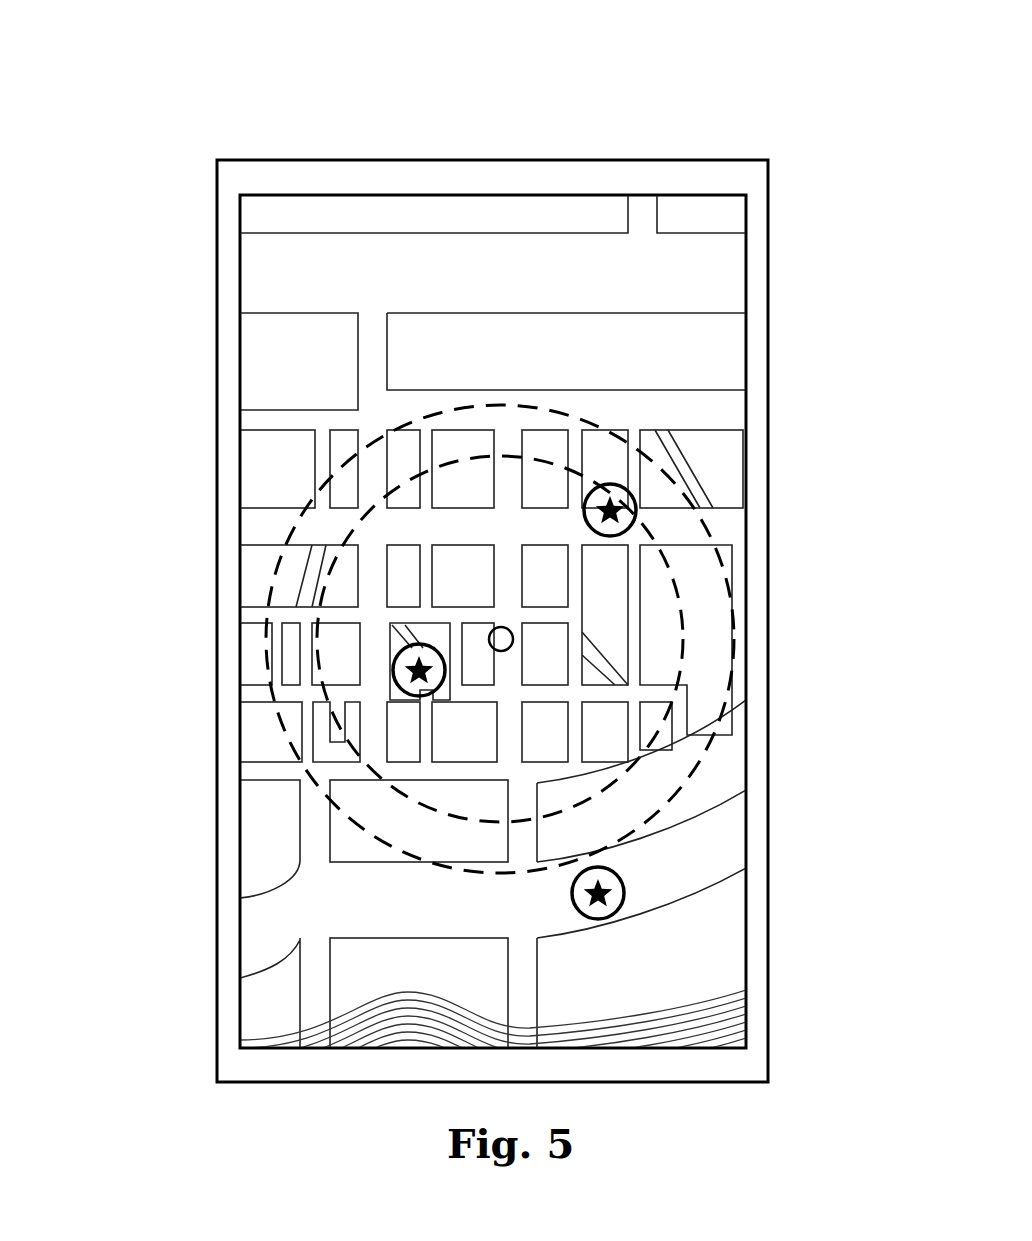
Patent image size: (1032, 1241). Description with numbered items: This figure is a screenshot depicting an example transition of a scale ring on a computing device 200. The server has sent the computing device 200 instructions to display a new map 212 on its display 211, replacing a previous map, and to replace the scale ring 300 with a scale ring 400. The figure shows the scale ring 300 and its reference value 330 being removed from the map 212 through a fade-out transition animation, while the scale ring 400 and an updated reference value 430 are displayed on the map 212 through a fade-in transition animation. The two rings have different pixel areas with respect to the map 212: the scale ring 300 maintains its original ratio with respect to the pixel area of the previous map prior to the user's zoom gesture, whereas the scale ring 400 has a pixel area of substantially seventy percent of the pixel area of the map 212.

The computing device 200 is at (707, 43).
The display 211 is at (746, 212).
The map 212 is at (722, 343).
The scale ring 300 is at (403, 413).
The scale ring 400 is at (322, 547).
The reference value 330 is at (572, 398).
The updated reference value 430 is at (572, 451).